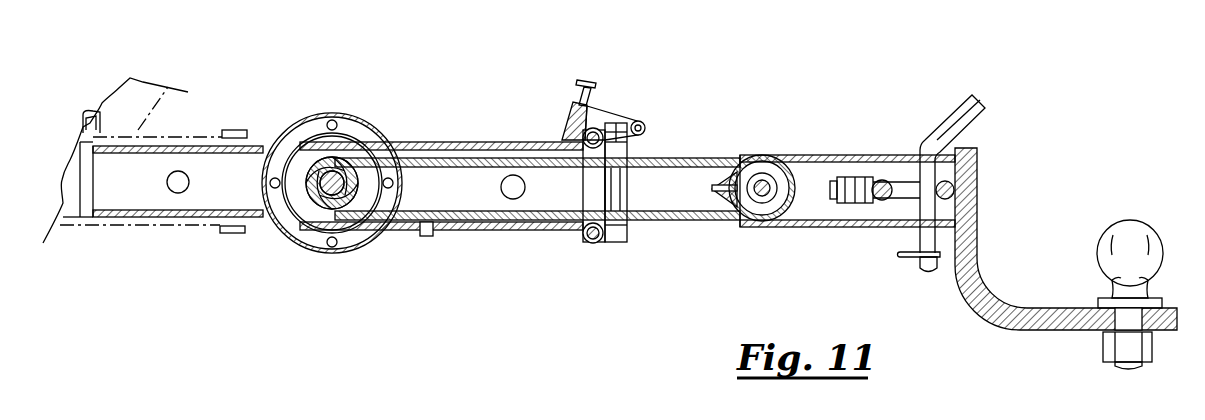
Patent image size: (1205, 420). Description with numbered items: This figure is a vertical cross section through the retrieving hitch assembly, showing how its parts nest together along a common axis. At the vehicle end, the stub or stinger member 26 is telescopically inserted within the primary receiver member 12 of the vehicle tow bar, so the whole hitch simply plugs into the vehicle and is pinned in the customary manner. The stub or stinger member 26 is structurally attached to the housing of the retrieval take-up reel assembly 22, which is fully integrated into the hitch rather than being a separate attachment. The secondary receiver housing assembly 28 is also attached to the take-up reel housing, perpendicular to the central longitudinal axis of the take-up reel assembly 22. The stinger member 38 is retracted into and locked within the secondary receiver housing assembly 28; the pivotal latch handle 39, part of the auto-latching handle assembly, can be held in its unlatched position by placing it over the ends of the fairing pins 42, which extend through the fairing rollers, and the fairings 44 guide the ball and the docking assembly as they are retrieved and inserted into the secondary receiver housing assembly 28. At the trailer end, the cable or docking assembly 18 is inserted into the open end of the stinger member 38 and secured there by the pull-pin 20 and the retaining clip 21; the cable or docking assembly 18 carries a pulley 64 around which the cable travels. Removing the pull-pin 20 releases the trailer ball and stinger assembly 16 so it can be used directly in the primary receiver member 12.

The primary receiver member 12 is at (236, 128).
The trailer ball and stinger assembly 16 is at (1020, 210).
The cable or docking assembly 18 is at (797, 213).
The pull-pin 20 is at (958, 122).
The retaining clip 21 is at (905, 258).
The retrieval take-up reel assembly 22 is at (329, 108).
The stub or stinger member 26 is at (260, 243).
The secondary receiver housing assembly 28 is at (482, 141).
The stinger member 38 is at (805, 155).
The pivotal latch handle 39 is at (607, 110).
The fairing pins 42 is at (613, 245).
The fairings 44 is at (622, 183).
The pulley 64 is at (198, 419).